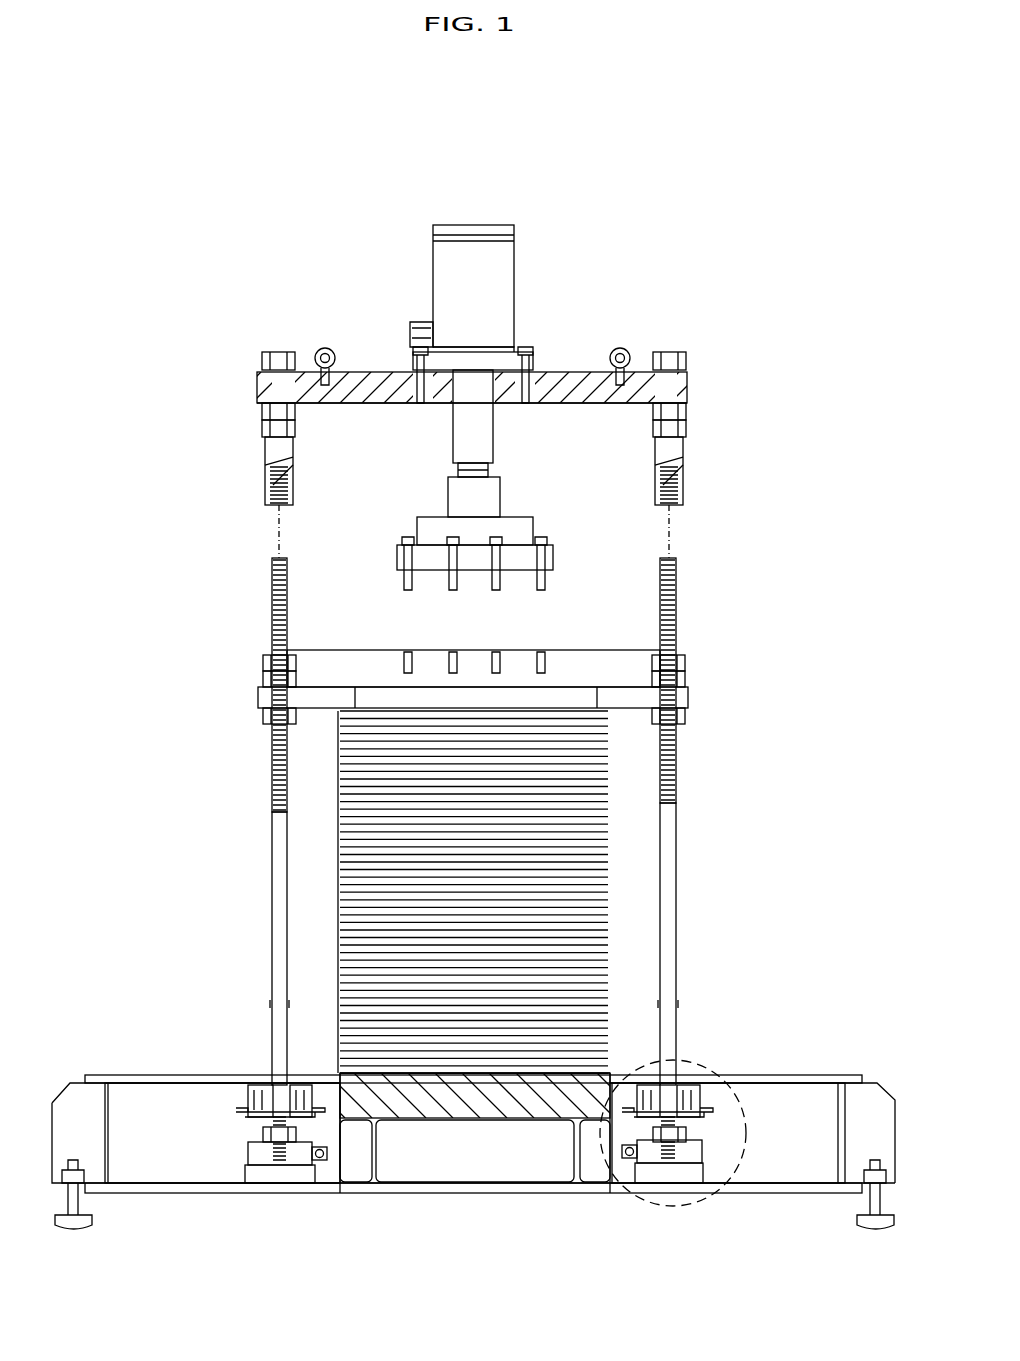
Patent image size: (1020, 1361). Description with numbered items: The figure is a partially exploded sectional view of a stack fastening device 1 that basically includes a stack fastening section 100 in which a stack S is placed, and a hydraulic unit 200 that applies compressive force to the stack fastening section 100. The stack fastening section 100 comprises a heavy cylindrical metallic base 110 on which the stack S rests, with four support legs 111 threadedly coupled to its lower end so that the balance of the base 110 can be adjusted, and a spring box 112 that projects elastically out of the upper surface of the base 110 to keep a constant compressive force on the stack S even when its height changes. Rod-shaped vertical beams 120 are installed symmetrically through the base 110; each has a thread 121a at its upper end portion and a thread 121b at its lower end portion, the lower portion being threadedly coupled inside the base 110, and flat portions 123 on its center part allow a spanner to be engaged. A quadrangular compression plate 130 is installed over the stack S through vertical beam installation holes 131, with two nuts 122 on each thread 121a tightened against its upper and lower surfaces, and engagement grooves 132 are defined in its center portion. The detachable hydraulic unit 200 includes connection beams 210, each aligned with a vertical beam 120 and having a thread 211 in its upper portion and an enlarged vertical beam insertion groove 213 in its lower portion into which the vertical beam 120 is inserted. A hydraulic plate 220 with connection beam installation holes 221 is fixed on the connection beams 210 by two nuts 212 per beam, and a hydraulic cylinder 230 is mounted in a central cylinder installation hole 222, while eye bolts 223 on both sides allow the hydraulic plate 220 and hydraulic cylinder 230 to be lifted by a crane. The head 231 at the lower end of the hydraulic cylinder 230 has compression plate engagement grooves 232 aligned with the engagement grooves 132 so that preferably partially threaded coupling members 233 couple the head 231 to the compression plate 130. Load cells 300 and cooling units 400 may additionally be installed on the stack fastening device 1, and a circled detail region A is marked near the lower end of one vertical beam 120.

The stack fastening device 1 is at (682, 210).
The stack fastening section 100 is at (222, 843).
The base 110 is at (112, 1070).
The support legs 111 is at (75, 1230).
The spring box 112 is at (482, 1110).
The vertical beams 120 is at (272, 925).
The thread 121a is at (270, 600).
The thread 121b is at (272, 1110).
The nuts 122 is at (262, 660).
The flat portions 123 is at (272, 1003).
The compression plate 130 is at (345, 665).
The vertical beam installation holes 131 is at (258, 700).
The engagement grooves 132 is at (545, 660).
The hydraulic unit 200 is at (175, 448).
The connection beams 210 is at (268, 455).
The thread 211 is at (265, 375).
The nuts 212 is at (268, 352).
The vertical beam insertion groove 213 is at (270, 502).
The hydraulic plate 220 is at (564, 375).
The connection beam installation holes 221 is at (690, 395).
The cylinder installation hole 222 is at (505, 400).
The eye bolts 223 is at (620, 350).
The hydraulic cylinder 230 is at (438, 258).
The head 231 is at (452, 497).
The compression plate engagement grooves 232 is at (400, 550).
The coupling members 233 is at (545, 578).
The load cells 300 is at (252, 1165).
The cooling units 400 is at (245, 1110).
The stack S is at (610, 955).
The detail region A is at (728, 1045).